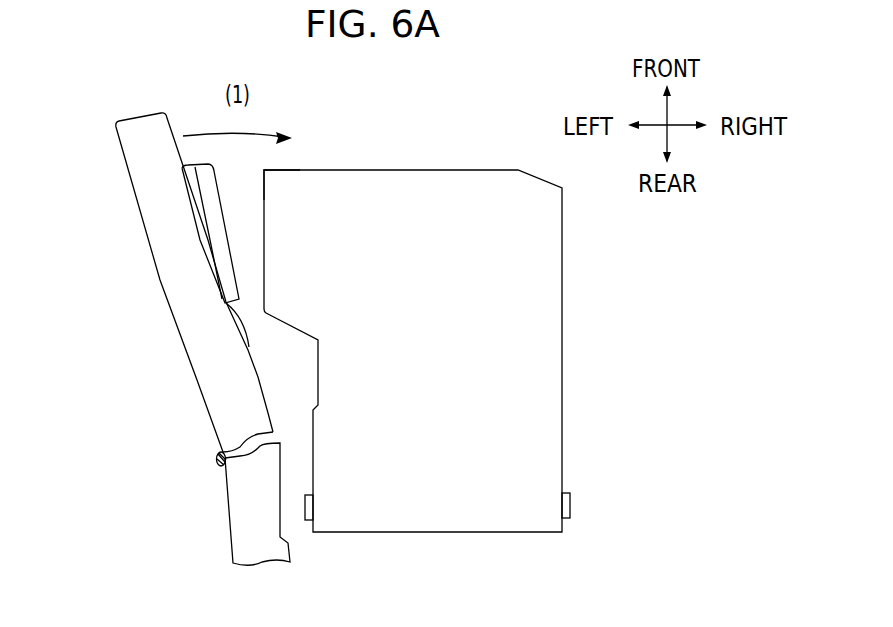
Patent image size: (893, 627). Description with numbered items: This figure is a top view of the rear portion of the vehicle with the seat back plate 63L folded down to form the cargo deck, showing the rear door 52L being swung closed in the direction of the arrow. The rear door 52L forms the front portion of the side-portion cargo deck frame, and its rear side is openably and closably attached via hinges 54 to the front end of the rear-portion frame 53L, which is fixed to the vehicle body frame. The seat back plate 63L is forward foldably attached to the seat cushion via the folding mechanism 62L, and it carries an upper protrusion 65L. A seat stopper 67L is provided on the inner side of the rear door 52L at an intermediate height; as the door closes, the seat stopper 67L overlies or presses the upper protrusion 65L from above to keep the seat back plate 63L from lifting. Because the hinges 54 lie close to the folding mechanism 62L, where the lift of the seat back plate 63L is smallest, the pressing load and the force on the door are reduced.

The rear door 52L is at (167, 305).
The rear-portion frame 53L is at (227, 523).
The hinges 54 is at (215, 462).
The folding mechanism 62L is at (572, 505).
The seat back plate 63L is at (418, 180).
The upper protrusion 65L is at (264, 200).
The seat stopper 67L is at (219, 209).